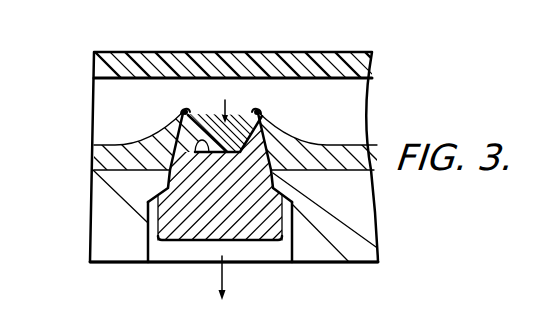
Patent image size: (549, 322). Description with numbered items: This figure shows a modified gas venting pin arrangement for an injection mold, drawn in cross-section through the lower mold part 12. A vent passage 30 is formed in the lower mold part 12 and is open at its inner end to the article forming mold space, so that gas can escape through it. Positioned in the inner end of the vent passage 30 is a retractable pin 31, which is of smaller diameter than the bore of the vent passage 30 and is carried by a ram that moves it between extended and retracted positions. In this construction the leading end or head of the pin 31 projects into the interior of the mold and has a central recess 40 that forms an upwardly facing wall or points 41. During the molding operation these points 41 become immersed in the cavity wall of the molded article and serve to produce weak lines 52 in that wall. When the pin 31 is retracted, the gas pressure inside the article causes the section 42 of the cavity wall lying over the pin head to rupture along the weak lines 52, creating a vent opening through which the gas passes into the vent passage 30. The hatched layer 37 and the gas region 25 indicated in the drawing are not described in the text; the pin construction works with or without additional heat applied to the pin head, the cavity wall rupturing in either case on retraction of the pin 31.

The lower mold part 12 is at (210, 157).
The gas chamber 25 is at (314, 99).
The vent passage 30 is at (168, 248).
The pin 31 is at (199, 270).
The insulating layer 37 is at (222, 143).
The central recess 40 is at (242, 208).
The upwardly facing wall or points 41 is at (207, 125).
The section of the cavity wall 42 is at (242, 47).
The weak lines 52 is at (200, 66).